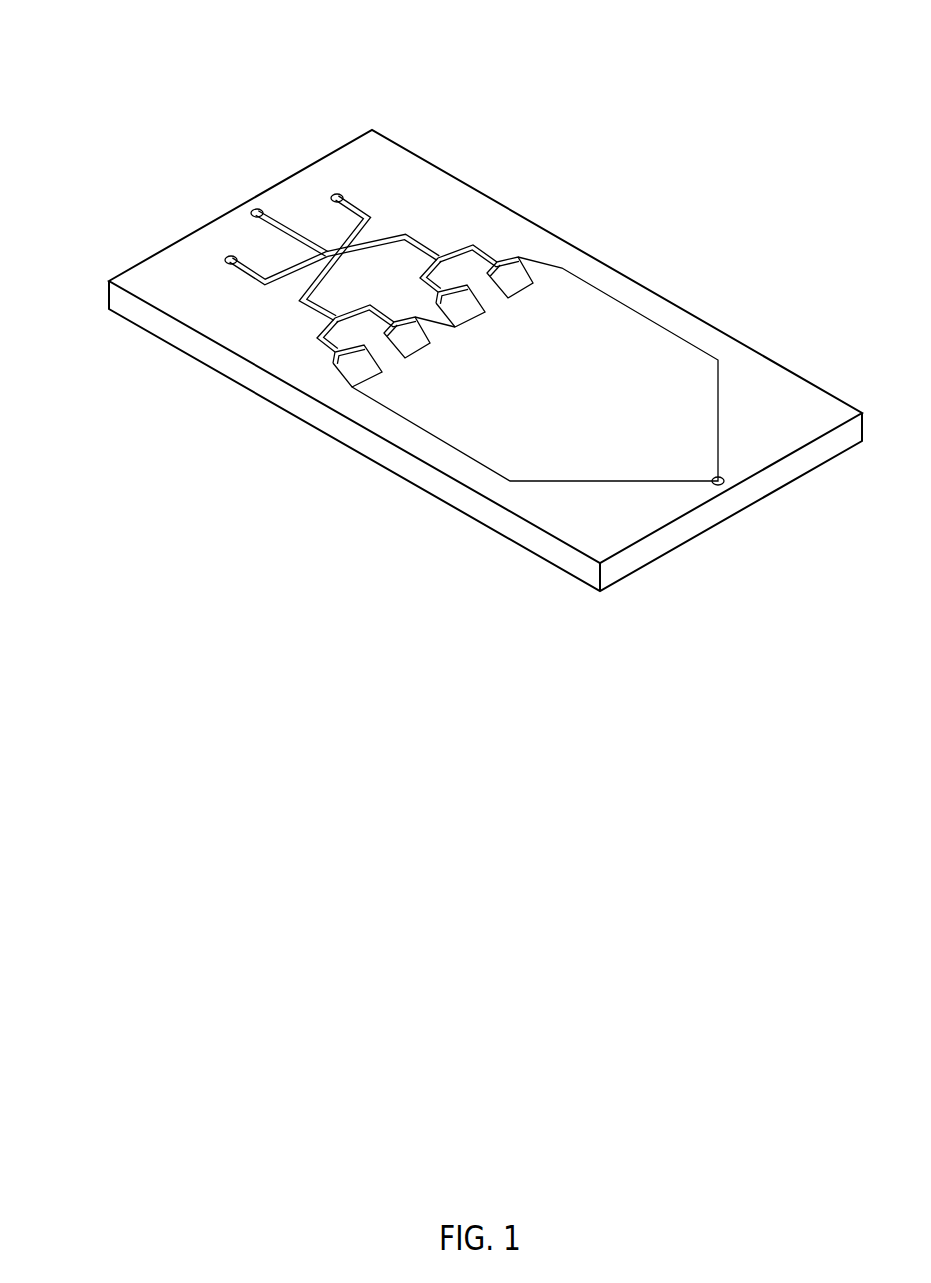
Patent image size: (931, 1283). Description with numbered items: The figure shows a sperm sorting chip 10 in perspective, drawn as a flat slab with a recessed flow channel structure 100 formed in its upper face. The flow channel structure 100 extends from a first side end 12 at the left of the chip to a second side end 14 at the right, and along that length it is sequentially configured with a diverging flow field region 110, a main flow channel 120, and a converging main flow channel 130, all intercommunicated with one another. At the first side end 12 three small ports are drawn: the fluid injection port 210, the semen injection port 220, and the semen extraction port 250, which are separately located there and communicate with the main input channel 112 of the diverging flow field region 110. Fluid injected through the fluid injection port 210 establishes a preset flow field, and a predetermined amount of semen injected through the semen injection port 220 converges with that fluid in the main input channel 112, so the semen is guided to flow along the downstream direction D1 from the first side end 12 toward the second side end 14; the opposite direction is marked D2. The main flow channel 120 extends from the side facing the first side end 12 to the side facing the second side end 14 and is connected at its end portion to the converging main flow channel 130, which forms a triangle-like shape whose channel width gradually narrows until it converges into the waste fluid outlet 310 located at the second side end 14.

The sperm sorting chip 10 is at (193, 43).
The first side end 12 is at (122, 238).
The second side end 14 is at (703, 555).
The flow channel structure 100 is at (690, 219).
The diverging flow field region 110 is at (492, 176).
The main input channel 112 is at (333, 255).
The main flow channel 120 is at (537, 309).
The converging main flow channel 130 is at (599, 369).
The fluid injection port 210 is at (331, 196).
The semen injection port 220 is at (226, 257).
The semen extraction port 250 is at (252, 212).
The waste fluid outlet 310 is at (724, 482).
The downstream direction D1 is at (440, 613).
The second direction D2 is at (348, 562).